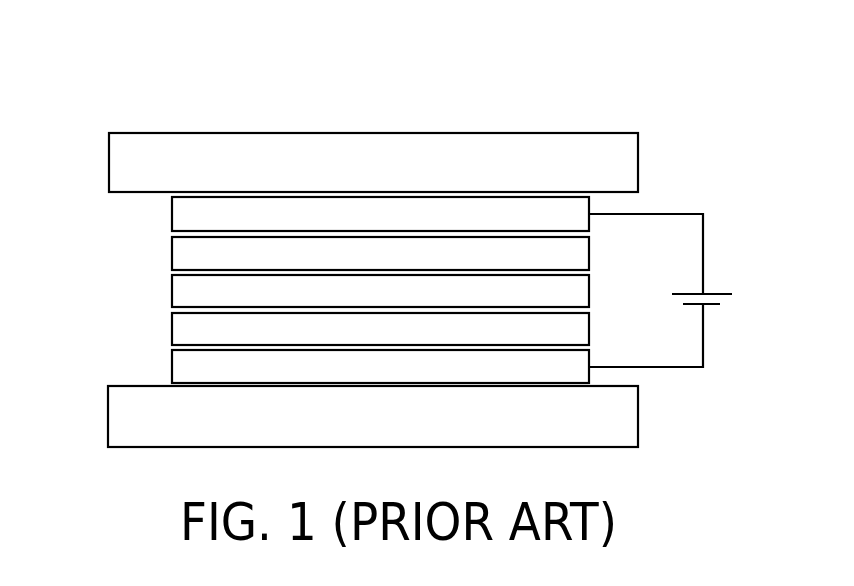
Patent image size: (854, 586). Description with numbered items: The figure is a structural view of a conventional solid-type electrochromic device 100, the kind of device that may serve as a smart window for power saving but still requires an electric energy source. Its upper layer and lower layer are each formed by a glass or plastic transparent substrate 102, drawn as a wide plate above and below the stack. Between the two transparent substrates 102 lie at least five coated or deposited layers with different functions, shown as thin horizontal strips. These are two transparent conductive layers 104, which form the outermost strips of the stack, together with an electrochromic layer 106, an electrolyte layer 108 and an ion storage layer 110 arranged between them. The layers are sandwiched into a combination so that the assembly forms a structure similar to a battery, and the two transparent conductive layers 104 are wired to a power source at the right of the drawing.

The electrochromic device 100 is at (317, 101).
The transparent substrate 102 is at (612, 180).
The transparent conductive layer 104 is at (178, 217).
The electrochromic layer 106 is at (178, 257).
The electrolyte layer 108 is at (178, 297).
The ion storage layer 110 is at (178, 335).